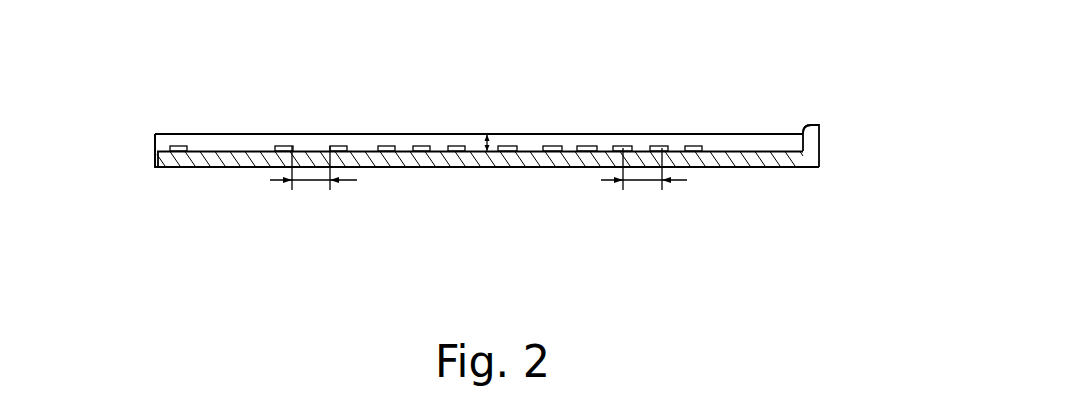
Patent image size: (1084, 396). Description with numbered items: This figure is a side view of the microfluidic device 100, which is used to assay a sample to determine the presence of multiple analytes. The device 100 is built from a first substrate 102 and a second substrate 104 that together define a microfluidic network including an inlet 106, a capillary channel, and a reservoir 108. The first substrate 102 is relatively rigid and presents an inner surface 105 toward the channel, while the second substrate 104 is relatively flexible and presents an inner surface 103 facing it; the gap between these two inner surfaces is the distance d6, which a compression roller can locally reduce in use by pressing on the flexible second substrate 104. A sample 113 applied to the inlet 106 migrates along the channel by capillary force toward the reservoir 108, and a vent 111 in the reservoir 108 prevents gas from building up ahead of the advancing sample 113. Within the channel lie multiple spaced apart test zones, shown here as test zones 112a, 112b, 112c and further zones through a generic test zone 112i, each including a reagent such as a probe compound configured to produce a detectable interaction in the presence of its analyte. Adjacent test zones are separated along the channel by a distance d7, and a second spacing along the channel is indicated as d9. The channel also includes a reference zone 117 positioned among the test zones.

The microfluidic device 100 is at (667, 192).
The first substrate 102 is at (820, 160).
The inner surface of second substrate 103 is at (757, 158).
The second substrate 104 is at (812, 137).
The inner surface of first substrate 105 is at (604, 151).
The inlet 106 is at (153, 141).
The reservoir 108 is at (777, 130).
The vent 111 is at (809, 125).
The test zone 112a is at (335, 146).
The test zone 112b is at (388, 146).
The test zone 112c is at (428, 146).
The test zone 112i is at (558, 146).
The sample 113 is at (238, 142).
The reference zone 117 is at (292, 150).
The distance between inner surfaces d6 is at (489, 135).
The distance between test zones d7 is at (310, 183).
The pitch dimension d9 is at (638, 183).